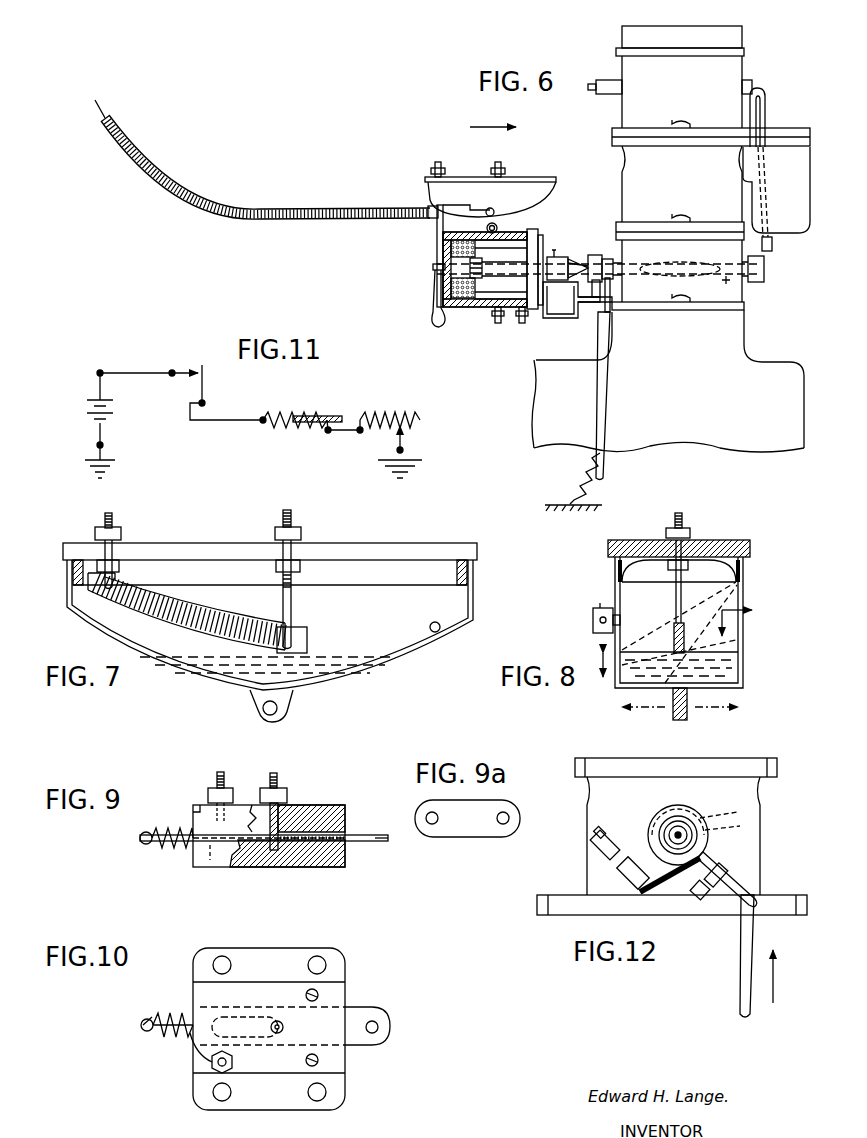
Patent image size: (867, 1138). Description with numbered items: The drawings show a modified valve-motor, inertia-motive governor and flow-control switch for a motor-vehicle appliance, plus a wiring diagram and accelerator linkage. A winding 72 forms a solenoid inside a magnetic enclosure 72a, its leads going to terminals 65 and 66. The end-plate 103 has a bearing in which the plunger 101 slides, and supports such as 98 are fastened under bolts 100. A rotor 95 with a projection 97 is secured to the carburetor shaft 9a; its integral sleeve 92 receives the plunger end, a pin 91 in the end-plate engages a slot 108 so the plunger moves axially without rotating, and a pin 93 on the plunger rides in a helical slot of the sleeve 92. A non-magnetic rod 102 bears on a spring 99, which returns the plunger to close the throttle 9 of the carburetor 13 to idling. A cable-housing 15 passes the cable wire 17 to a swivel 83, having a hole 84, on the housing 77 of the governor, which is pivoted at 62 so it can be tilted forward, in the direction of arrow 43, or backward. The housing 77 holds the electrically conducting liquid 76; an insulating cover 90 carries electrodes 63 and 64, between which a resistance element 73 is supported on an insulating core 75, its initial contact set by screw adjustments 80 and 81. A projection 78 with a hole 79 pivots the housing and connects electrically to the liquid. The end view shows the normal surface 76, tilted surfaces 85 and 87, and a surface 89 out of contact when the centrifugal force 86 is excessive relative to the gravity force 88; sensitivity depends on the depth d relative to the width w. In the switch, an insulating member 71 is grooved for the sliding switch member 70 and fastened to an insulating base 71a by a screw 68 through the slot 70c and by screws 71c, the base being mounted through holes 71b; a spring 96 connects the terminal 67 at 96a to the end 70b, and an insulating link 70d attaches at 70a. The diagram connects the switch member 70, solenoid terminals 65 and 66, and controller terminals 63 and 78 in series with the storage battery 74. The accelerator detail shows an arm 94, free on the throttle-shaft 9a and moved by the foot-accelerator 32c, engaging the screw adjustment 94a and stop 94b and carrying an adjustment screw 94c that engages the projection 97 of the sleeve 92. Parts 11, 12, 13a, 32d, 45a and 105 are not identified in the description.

In FIG. 6, the throttle 9 is at (598, 257).
In FIG. 12, the throttle 9 is at (726, 817).
In FIG. 6, the carburetor shaft 9a is at (726, 280).
In FIG. 12, the carburetor shaft 9a is at (676, 866).
In FIG. 6, the fuel tank 11 is at (765, 124).
In FIG. 6, the fuel pipe 12 is at (750, 122).
In FIG. 6, the carburetor 13 is at (744, 292).
In FIG. 12, the carburetor 13 is at (762, 812).
In FIG. 6, the housing base 13a is at (746, 340).
In FIG. 6, the cable-housing 15 is at (294, 208).
In FIG. 6, the cable wire 17 is at (463, 205).
In FIG. 6, the foot-accelerator mechanism 32c is at (602, 432).
In FIG. 12, the foot-accelerator mechanism 32c is at (745, 956).
In FIG. 6, the return spring 32d is at (585, 470).
In FIG. 6, the arrow 43 is at (522, 130).
In FIG. 12, the direction arrow 45a is at (777, 968).
In FIG. 6, the pivot 62 is at (498, 228).
In FIG. 6, the electrode 63 is at (441, 164).
In FIG. 11, the electrode 63 is at (358, 434).
In FIG. 7, the electrode 63 is at (114, 520).
In FIG. 6, the electrode 64 is at (502, 164).
In FIG. 7, the electrode 64 is at (294, 516).
In FIG. 6, the solenoid terminal 65 is at (498, 323).
In FIG. 11, the solenoid terminal 65 is at (326, 434).
In FIG. 8, the solenoid terminal 65 is at (684, 516).
In FIG. 6, the solenoid terminal 66 is at (522, 323).
In FIG. 11, the solenoid terminal 66 is at (263, 424).
In FIG. 11, the terminal 67 is at (206, 403).
In FIG. 9, the terminal 67 is at (225, 770).
In FIG. 10, the terminal 67 is at (234, 1062).
In FIG. 11, the screw 68 is at (173, 369).
In FIG. 9, the screw 68 is at (279, 771).
In FIG. 10, the screw 68 is at (284, 1027).
In FIG. 11, the switch member 70 is at (205, 385).
In FIG. 9, the switch member 70 is at (362, 843).
In FIG. 10, the switch member 70 is at (374, 1007).
In FIG. 9, the switch member end 70a is at (372, 834).
In FIG. 10, the switch member end 70a is at (385, 1038).
In FIG. 10, the switch member end 70b is at (148, 1032).
In FIG. 9, the slot 70c is at (214, 868).
In FIG. 10, the slot 70c is at (232, 1012).
In FIG. 9a, the link 70d is at (466, 838).
In FIG. 9, the insulating member 71 is at (330, 805).
In FIG. 10, the insulating member 71 is at (345, 985).
In FIG. 9, the insulating base 71a is at (300, 868).
In FIG. 10, the insulating base 71a is at (288, 948).
In FIG. 10, the holes 71b is at (322, 958).
In FIG. 10, the screws 71c is at (345, 1068).
In FIG. 6, the winding 72 is at (463, 300).
In FIG. 11, the winding 72 is at (300, 413).
In FIG. 6, the magnetic enclosure 72a is at (450, 308).
In FIG. 11, the resistance element 73 is at (385, 413).
In FIG. 7, the resistance element 73 is at (212, 618).
In FIG. 8, the resistance element 73 is at (672, 632).
In FIG. 11, the electric power source 74 is at (87, 407).
In FIG. 7, the insulating core 75 is at (308, 632).
In FIG. 8, the insulating core 75 is at (668, 602).
In FIG. 7, the electrically conducting liquid 76 is at (362, 655).
In FIG. 8, the electrically conducting liquid 76 is at (740, 653).
In FIG. 6, the housing 77 is at (556, 182).
In FIG. 7, the housing 77 is at (430, 640).
In FIG. 11, the projection 78 is at (404, 450).
In FIG. 7, the projection 78 is at (290, 706).
In FIG. 8, the projection 78 is at (672, 712).
In FIG. 7, the hole 79 is at (264, 716).
In FIG. 7, the screw adjustment 80 is at (302, 567).
In FIG. 7, the screw adjustment 81 is at (122, 567).
In FIG. 6, the swivel 83 is at (490, 208).
In FIG. 8, the swivel 83 is at (600, 606).
In FIG. 8, the hole 84 is at (593, 620).
In FIG. 8, the liquid surface 85 is at (738, 670).
In FIG. 8, the centrifugal force 86 is at (756, 612).
In FIG. 8, the liquid surface 87 is at (736, 628).
In FIG. 8, the gravity force 88 is at (718, 624).
In FIG. 8, the liquid surface 89 is at (736, 606).
In FIG. 7, the insulating cover 90 is at (477, 548).
In FIG. 8, the insulating cover 90 is at (750, 548).
In FIG. 6, the pin 91 is at (556, 257).
In FIG. 6, the sleeve 92 is at (578, 260).
In FIG. 12, the sleeve 92 is at (684, 820).
In FIG. 6, the pin 93 is at (595, 255).
In FIG. 6, the arm 94 is at (610, 312).
In FIG. 12, the arm 94 is at (668, 808).
In FIG. 12, the screw adjustment 94a is at (605, 832).
In FIG. 12, the stop 94b is at (626, 855).
In FIG. 12, the adjustment screw 94c is at (705, 898).
In FIG. 6, the rotor 95 is at (607, 259).
In FIG. 12, the rotor 95 is at (702, 815).
In FIG. 9, the spring 96 is at (170, 850).
In FIG. 10, the spring 96 is at (166, 1015).
In FIG. 9, the spring connection 96a is at (195, 814).
In FIG. 10, the spring connection 96a is at (195, 1063).
In FIG. 6, the projection 97 is at (592, 288).
In FIG. 12, the projection 97 is at (745, 878).
In FIG. 6, the support 98 is at (560, 318).
In FIG. 6, the spring 99 is at (432, 316).
In FIG. 6, the bolts 100 is at (690, 310).
In FIG. 6, the plunger 101 is at (498, 264).
In FIG. 6, the non-magnetic rod 102 is at (433, 267).
In FIG. 6, the end-plate 103 is at (538, 232).
In FIG. 6, the cable ferrule 105 is at (430, 208).
In FIG. 6, the slot 108 is at (504, 276).
In FIG. 8, the depth d is at (600, 660).
In FIG. 8, the width w is at (710, 712).